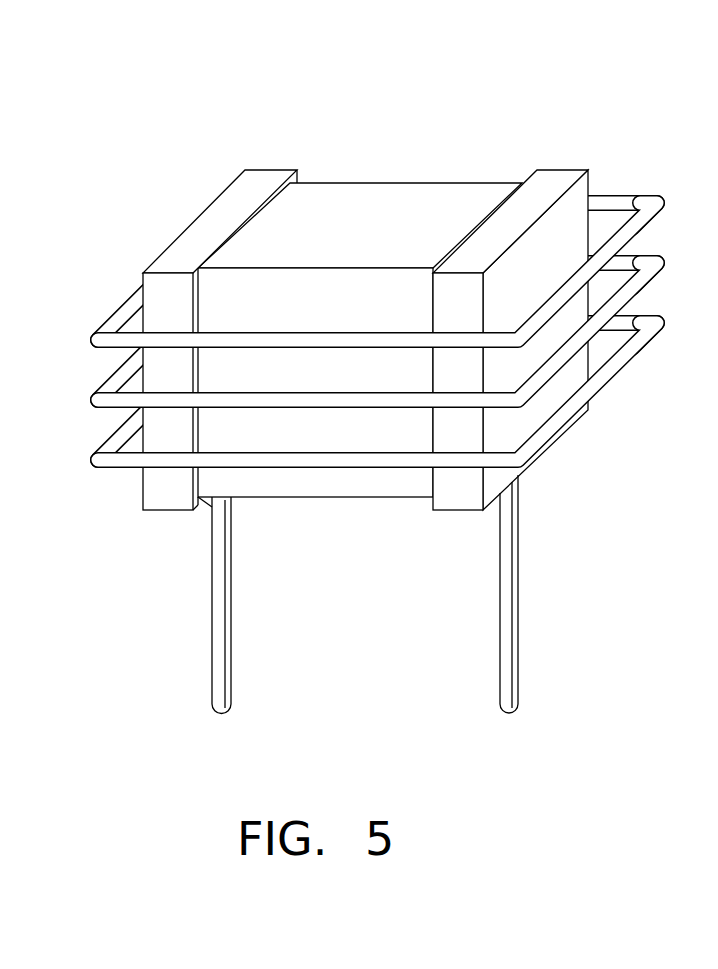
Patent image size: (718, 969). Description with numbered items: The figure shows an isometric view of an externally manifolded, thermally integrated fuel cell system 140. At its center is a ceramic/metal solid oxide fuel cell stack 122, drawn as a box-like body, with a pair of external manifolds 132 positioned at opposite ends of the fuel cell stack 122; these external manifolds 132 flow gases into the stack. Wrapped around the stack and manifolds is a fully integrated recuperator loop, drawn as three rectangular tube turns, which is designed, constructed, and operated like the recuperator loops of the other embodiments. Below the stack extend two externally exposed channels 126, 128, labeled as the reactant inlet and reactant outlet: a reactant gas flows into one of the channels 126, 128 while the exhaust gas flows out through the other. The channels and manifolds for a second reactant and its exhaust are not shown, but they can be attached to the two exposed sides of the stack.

The fuel cell stack 122 is at (357, 210).
The externally exposed channel 126 is at (212, 653).
The externally exposed channel 128 is at (500, 632).
The external manifold 132 is at (232, 212).
The fuel cell system 140 is at (345, 390).